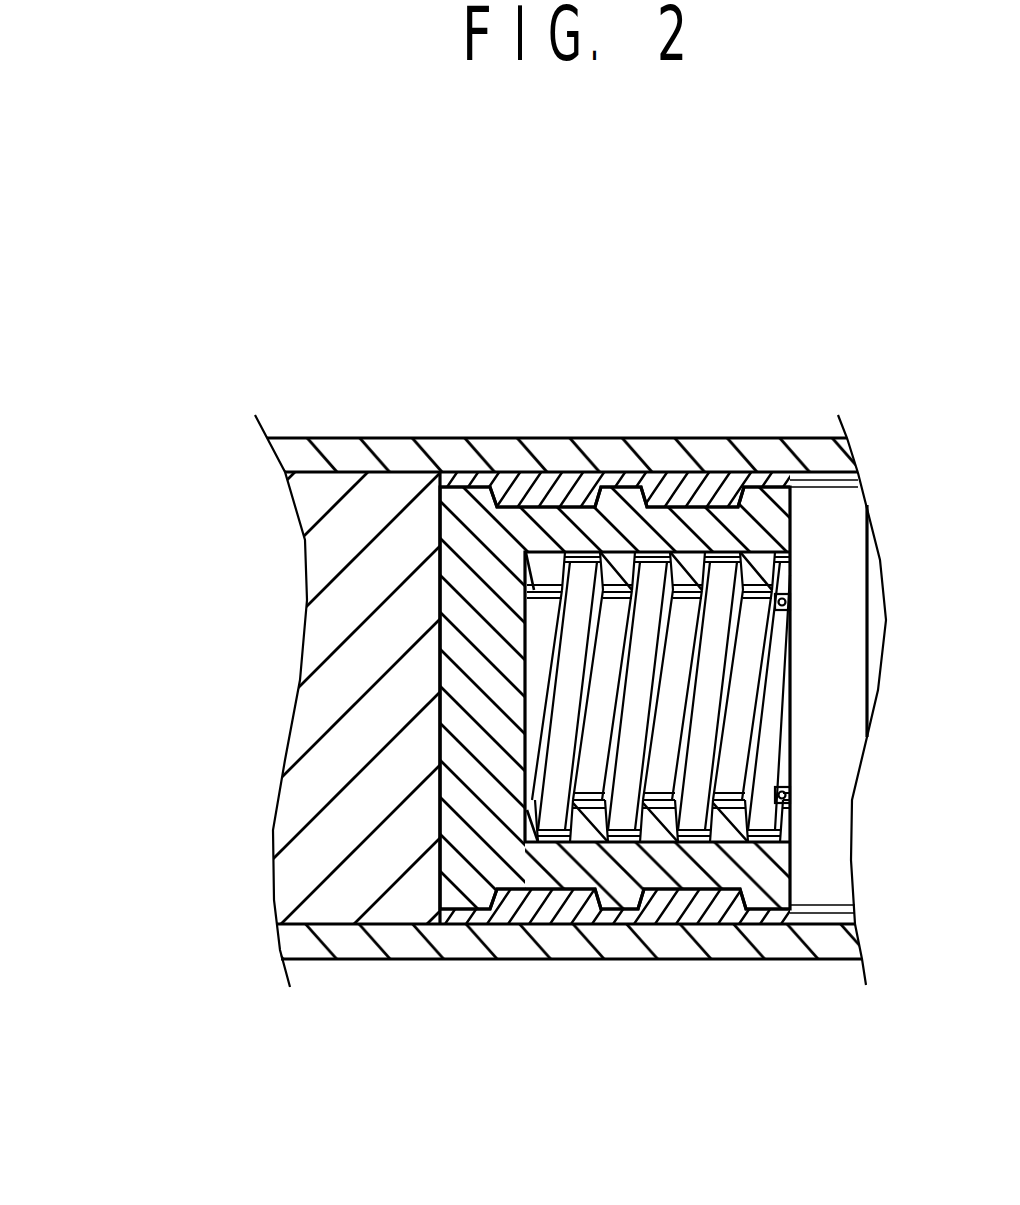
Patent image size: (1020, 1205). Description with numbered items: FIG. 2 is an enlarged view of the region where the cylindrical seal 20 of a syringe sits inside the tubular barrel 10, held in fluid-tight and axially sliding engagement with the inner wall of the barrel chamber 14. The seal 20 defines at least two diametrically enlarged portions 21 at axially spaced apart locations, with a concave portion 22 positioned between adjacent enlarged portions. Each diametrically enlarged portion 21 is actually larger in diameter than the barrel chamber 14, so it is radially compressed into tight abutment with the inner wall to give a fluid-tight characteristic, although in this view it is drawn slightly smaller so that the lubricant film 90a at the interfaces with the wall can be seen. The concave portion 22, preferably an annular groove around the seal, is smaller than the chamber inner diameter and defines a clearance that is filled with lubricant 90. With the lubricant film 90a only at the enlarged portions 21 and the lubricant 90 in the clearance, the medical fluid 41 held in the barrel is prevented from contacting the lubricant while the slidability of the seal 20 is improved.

The barrel 10 is at (340, 438).
The barrel chamber 14 is at (338, 575).
The seal 20 is at (480, 847).
The diametrically enlarged portion 21 is at (443, 475).
The concave portion 22 is at (518, 490).
The medical fluid 41 is at (310, 765).
The lubricant 90 is at (550, 927).
The lubricant film 90a is at (465, 925).